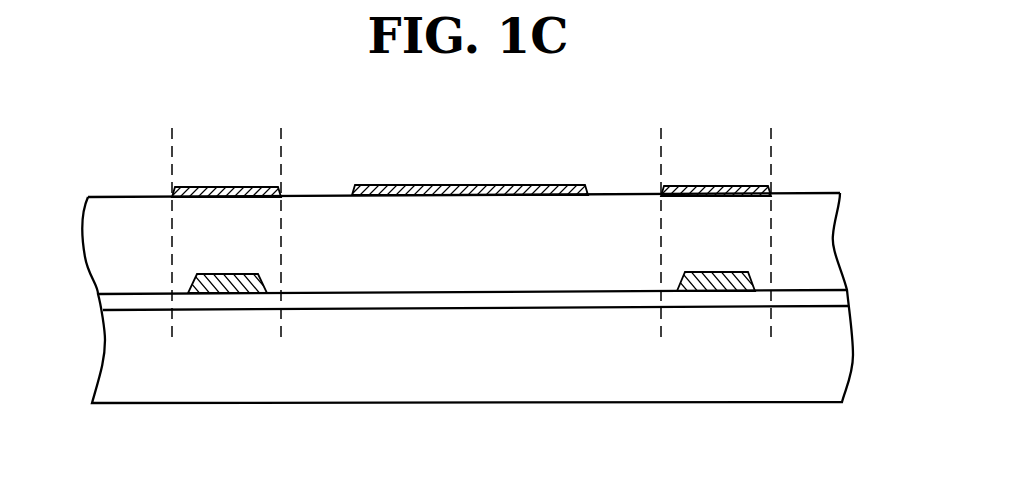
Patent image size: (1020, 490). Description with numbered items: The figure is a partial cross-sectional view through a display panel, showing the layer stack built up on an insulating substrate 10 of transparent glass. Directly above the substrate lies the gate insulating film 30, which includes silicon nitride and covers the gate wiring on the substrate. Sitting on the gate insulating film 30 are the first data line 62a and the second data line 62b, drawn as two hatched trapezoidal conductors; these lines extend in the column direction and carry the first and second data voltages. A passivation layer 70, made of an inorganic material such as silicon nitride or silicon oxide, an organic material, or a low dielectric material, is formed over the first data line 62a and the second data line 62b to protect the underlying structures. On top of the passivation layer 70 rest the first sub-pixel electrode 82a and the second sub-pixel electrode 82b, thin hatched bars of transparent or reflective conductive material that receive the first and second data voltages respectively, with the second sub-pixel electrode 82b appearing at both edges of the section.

The insulating substrate 10 is at (398, 387).
The gate insulating film 30 is at (592, 300).
The passivation layer 70 is at (509, 258).
The first data line 62a is at (229, 283).
The second data line 62b is at (720, 280).
The first sub-pixel electrode 82a is at (471, 185).
The second sub-pixel electrode 82b is at (228, 187).